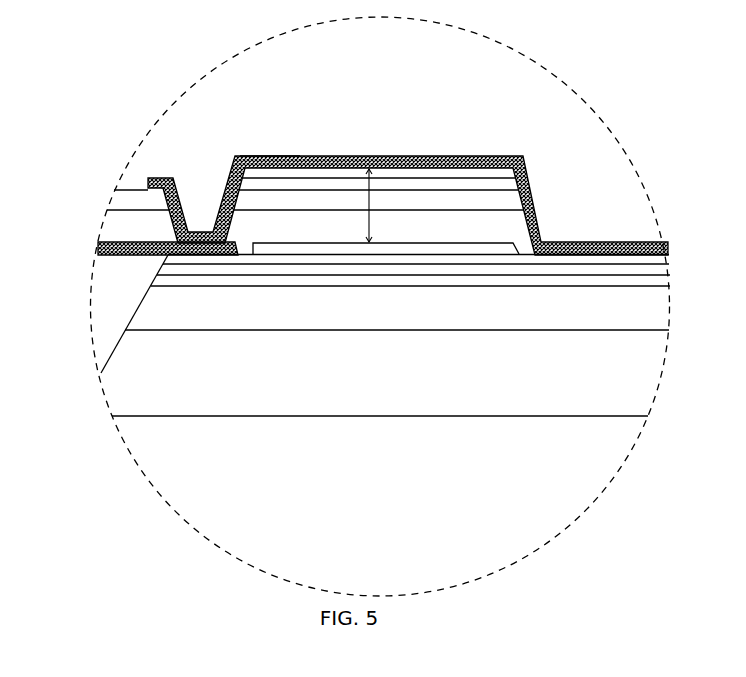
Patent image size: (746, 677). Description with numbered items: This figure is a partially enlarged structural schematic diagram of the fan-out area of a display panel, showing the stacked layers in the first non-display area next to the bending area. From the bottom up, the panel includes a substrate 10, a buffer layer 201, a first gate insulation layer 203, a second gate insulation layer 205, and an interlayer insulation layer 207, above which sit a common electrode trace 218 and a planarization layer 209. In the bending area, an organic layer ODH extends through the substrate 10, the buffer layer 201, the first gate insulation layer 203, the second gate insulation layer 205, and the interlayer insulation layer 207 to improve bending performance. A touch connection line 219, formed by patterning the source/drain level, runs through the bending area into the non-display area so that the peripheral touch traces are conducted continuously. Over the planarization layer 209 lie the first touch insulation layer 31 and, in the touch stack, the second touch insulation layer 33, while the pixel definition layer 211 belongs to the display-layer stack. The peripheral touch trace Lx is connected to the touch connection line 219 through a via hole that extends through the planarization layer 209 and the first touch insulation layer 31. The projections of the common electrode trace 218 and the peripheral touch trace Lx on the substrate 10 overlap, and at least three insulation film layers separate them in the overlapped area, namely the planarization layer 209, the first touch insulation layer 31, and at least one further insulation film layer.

The substrate 10 is at (522, 350).
The buffer layer 201 is at (498, 308).
The first gate insulation layer 203 is at (467, 285).
The second gate insulation layer 205 is at (440, 273).
The interlayer insulation layer 207 is at (413, 262).
The planarization layer 209 is at (343, 227).
The pixel definition layer 211 is at (323, 200).
The common electrode trace 218 is at (388, 242).
The touch connection line 219 is at (123, 242).
The first touch insulation layer 31 is at (300, 180).
The second touch insulation layer 33 is at (275, 172).
The peripheral touch trace Lx is at (263, 156).
The organic layer ODH is at (122, 295).